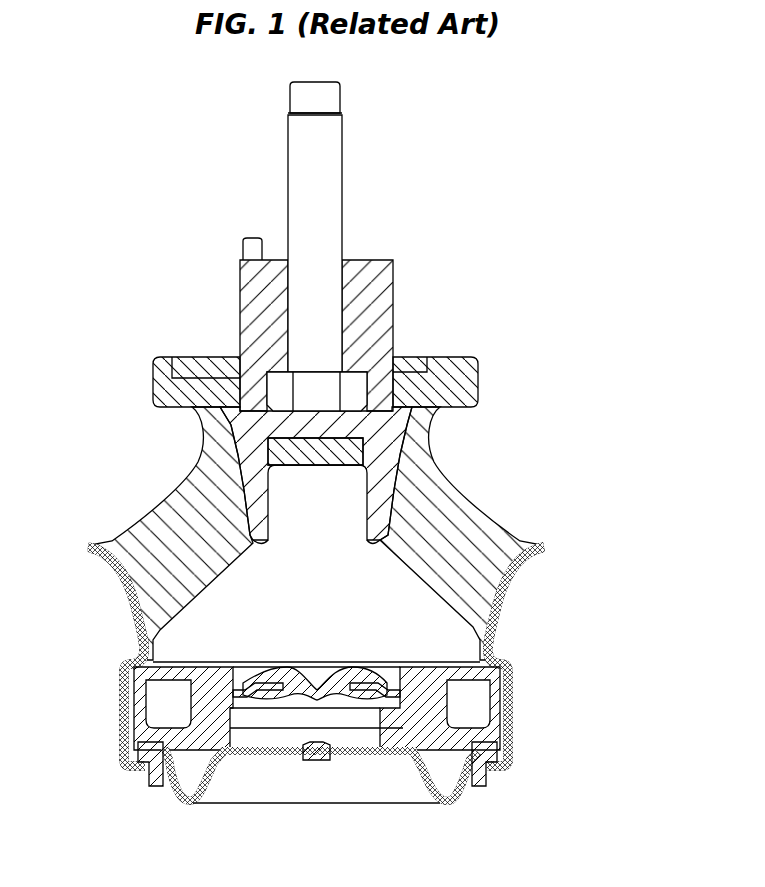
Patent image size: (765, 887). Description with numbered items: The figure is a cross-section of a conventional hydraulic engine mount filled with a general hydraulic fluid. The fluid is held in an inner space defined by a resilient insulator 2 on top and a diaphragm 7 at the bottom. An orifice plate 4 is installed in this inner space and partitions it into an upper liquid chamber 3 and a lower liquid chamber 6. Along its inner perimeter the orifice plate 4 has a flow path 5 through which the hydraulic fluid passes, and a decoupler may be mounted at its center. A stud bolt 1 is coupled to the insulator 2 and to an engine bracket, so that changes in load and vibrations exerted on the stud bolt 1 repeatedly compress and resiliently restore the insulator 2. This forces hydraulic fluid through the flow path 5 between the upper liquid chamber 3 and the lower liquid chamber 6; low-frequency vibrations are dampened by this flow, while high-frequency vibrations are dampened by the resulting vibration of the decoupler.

The stud bolt 1 is at (315, 226).
The insulator 2 is at (437, 517).
The upper liquid chamber 3 is at (240, 585).
The orifice plate 4 is at (332, 708).
The flow path 5 is at (172, 697).
The lower liquid chamber 6 is at (183, 773).
The diaphragm 7 is at (207, 781).